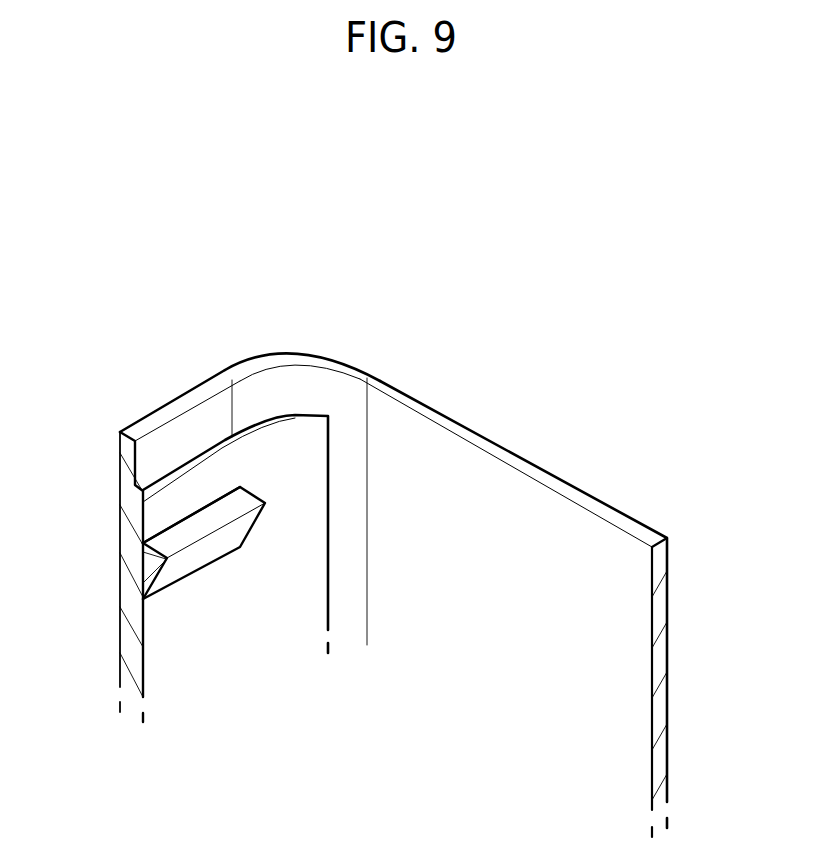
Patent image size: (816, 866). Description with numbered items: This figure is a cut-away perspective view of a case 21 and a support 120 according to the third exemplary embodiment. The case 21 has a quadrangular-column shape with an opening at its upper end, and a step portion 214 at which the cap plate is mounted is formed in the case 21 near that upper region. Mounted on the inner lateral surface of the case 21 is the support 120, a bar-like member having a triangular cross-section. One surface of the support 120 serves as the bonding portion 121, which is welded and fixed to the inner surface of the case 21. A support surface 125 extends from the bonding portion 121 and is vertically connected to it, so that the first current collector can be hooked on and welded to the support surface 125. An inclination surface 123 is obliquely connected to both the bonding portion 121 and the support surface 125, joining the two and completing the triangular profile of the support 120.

The case 21 is at (528, 468).
The step portion 214 is at (217, 443).
The support 120 is at (196, 502).
The bonding portion 121 is at (142, 578).
The inclination surface 123 is at (197, 557).
The support surface 125 is at (172, 538).